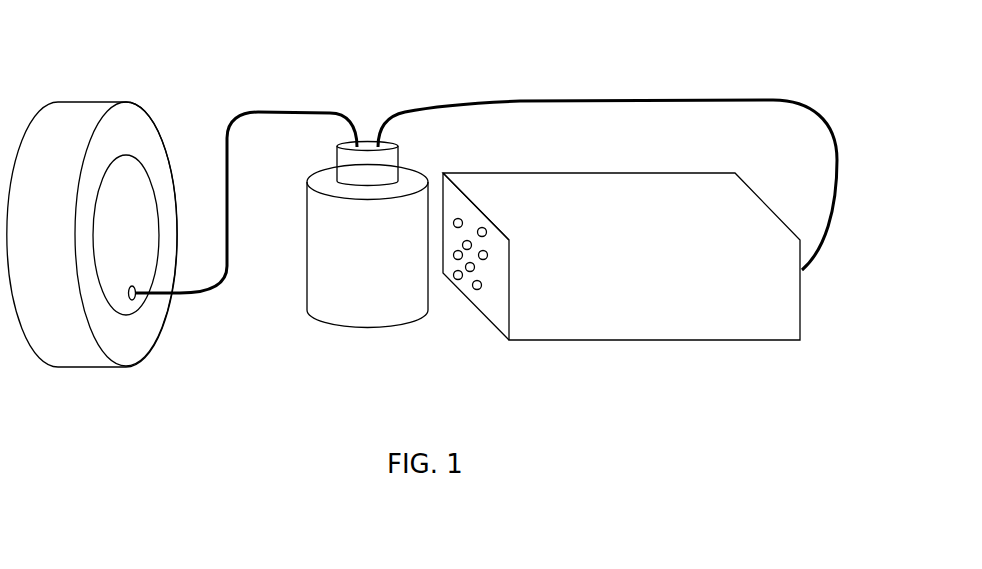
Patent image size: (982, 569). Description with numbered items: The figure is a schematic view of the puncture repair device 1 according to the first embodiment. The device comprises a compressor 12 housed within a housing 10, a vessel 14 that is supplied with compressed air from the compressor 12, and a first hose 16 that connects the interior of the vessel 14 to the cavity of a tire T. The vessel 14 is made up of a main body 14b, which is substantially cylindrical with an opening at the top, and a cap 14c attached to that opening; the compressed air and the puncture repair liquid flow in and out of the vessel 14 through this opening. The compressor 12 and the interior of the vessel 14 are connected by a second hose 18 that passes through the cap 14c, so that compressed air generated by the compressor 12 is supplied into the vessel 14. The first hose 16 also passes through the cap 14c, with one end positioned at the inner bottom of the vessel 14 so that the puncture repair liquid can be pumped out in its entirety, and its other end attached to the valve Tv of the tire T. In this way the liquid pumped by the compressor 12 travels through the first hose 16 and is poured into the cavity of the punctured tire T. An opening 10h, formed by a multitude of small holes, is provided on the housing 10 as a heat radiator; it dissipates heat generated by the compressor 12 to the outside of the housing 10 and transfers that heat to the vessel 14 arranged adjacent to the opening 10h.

The puncture repair device 1 is at (662, 63).
The tire T is at (83, 113).
The valve Tv is at (134, 302).
The first hose 16 is at (282, 108).
The second hose 18 is at (552, 100).
The vessel 14 is at (290, 311).
The main body 14b is at (382, 315).
The cap 14c is at (392, 167).
The housing 10 is at (670, 325).
The compressor 12 is at (621, 256).
The opening 10h is at (469, 272).